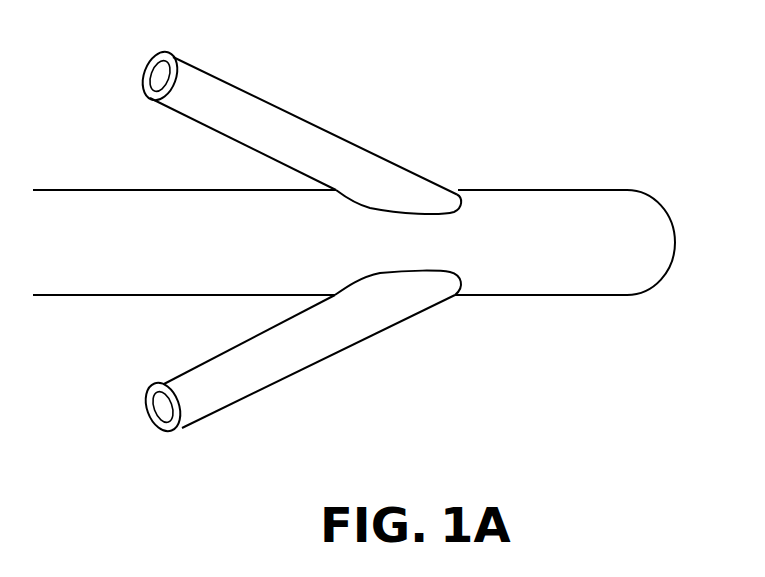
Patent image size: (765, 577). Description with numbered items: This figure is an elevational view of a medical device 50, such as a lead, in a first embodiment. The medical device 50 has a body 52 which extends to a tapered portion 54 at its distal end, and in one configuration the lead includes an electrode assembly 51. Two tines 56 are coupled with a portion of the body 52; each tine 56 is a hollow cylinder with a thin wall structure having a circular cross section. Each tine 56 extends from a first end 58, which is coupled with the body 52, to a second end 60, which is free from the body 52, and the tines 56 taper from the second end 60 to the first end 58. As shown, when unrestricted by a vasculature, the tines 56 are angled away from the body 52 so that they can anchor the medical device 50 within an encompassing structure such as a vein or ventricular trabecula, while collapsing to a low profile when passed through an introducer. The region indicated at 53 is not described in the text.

The medical device 50 is at (580, 416).
The electrode assembly 51 is at (563, 297).
The body 52 is at (90, 188).
The distal catheter body portion 53 is at (565, 132).
The tapered portion 54 is at (665, 202).
The tines 56 is at (292, 108).
The first end 58 is at (448, 187).
The second end 60 is at (177, 55).